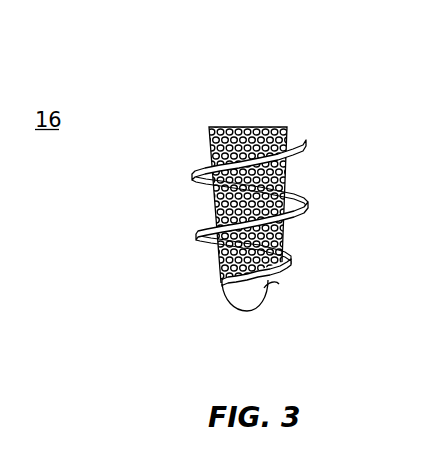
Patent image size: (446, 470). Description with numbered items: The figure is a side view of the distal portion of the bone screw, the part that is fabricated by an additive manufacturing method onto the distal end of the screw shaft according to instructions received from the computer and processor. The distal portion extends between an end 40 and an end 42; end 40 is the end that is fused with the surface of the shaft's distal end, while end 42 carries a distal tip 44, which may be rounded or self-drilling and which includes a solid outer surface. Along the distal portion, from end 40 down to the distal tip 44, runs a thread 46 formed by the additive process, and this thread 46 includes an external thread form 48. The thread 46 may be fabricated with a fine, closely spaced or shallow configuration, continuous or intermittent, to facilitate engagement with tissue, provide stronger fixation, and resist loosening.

The end 40 is at (254, 129).
The end 42 is at (230, 305).
The distal tip 44 is at (248, 294).
The thread 46 is at (303, 206).
The external thread form 48 is at (174, 238).